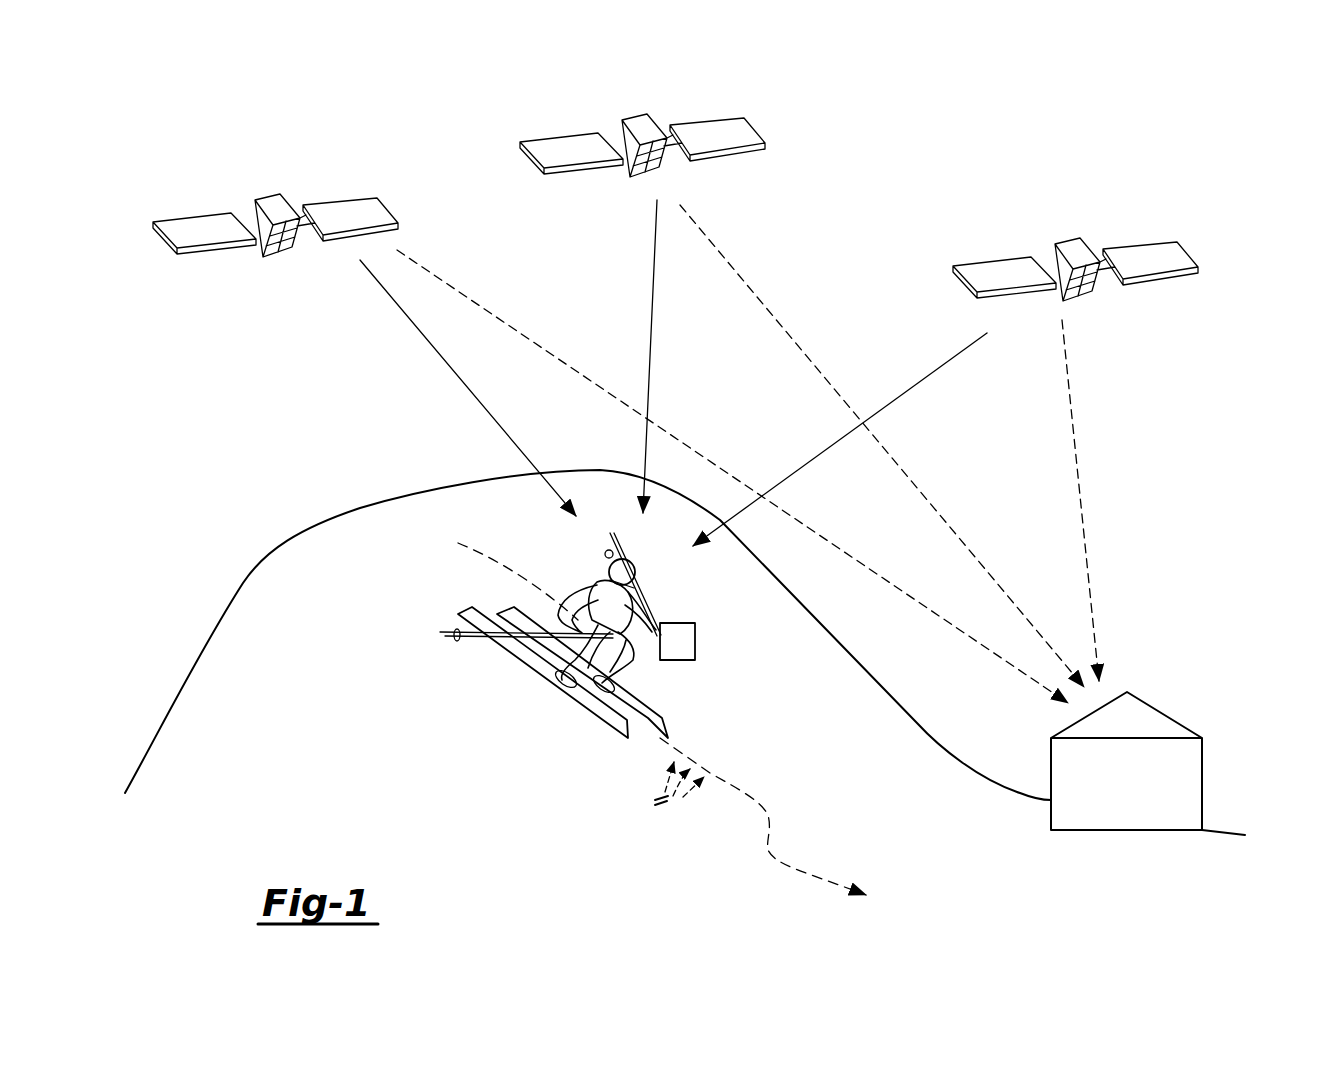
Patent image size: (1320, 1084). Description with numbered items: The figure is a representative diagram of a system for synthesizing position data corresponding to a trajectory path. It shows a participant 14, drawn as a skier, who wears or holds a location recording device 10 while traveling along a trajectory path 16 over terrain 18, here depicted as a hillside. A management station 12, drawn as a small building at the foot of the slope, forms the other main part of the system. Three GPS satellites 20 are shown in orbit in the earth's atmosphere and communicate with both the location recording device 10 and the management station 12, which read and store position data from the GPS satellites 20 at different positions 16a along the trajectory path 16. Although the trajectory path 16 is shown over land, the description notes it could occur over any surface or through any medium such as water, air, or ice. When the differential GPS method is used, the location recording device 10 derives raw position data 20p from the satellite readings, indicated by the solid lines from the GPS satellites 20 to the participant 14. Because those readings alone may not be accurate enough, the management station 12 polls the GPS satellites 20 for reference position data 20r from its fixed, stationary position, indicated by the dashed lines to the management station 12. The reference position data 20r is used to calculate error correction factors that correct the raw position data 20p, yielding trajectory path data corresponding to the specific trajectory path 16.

The location recording device 10 is at (697, 642).
The management station 12 is at (1140, 802).
The participant 14 is at (577, 657).
The trajectory path 16 is at (758, 854).
The positions 16a is at (668, 799).
The terrain 18 is at (312, 679).
The GPS satellites 20 is at (560, 133).
The raw position data 20p is at (400, 312).
The reference position data 20r is at (773, 313).